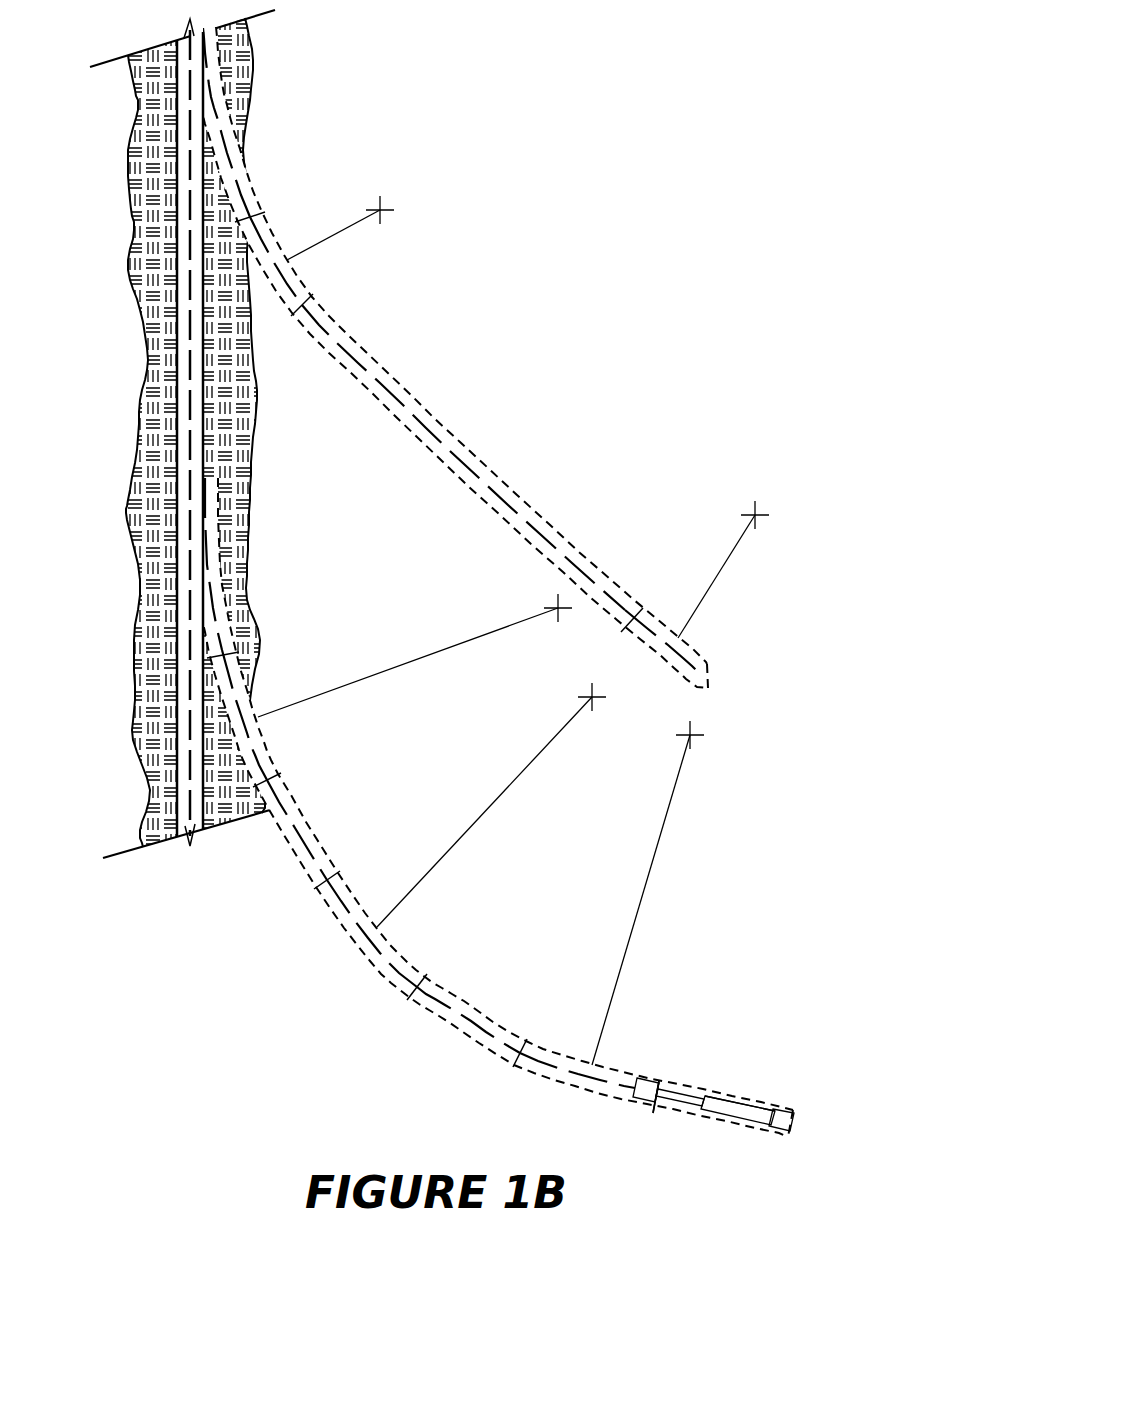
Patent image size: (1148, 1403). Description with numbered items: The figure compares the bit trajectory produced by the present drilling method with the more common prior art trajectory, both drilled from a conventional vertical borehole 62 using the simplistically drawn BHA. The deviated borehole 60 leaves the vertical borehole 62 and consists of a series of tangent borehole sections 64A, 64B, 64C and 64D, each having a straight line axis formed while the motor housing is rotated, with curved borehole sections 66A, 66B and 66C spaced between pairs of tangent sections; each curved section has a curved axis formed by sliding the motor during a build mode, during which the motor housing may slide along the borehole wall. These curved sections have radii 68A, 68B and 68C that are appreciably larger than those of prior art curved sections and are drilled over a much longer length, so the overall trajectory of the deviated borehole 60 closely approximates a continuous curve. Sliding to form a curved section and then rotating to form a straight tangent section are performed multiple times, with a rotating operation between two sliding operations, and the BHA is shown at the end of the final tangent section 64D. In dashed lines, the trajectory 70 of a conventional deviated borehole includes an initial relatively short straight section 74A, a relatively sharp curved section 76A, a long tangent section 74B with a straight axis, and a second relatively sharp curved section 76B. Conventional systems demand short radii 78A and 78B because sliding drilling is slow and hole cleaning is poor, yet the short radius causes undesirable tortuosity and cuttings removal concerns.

The vertical borehole 62 is at (183, 371).
The trajectory of a conventional deviated borehole 70 is at (495, 357).
The deviated borehole 60 is at (549, 807).
The initial straight borehole section 74A is at (243, 158).
The sharp curved borehole section 76A is at (288, 290).
The long tangent borehole section 74B is at (478, 478).
The second sharp curved borehole section 76B is at (685, 658).
The short radius 78A is at (352, 227).
The short radius 78B is at (737, 545).
The tangent borehole section 64A is at (217, 613).
The curved borehole section 66A is at (250, 737).
The tangent borehole section 64B is at (277, 787).
The curved borehole section 66B is at (380, 952).
The tangent borehole section 64C is at (457, 1012).
The curved borehole section 66C is at (623, 1077).
The tangent borehole section 64D is at (710, 1098).
The radius of curved section 68A is at (510, 624).
The radius of curved section 68B is at (540, 752).
The radius of curved section 68C is at (660, 828).
The bottom hole assembly BHA is at (793, 1102).